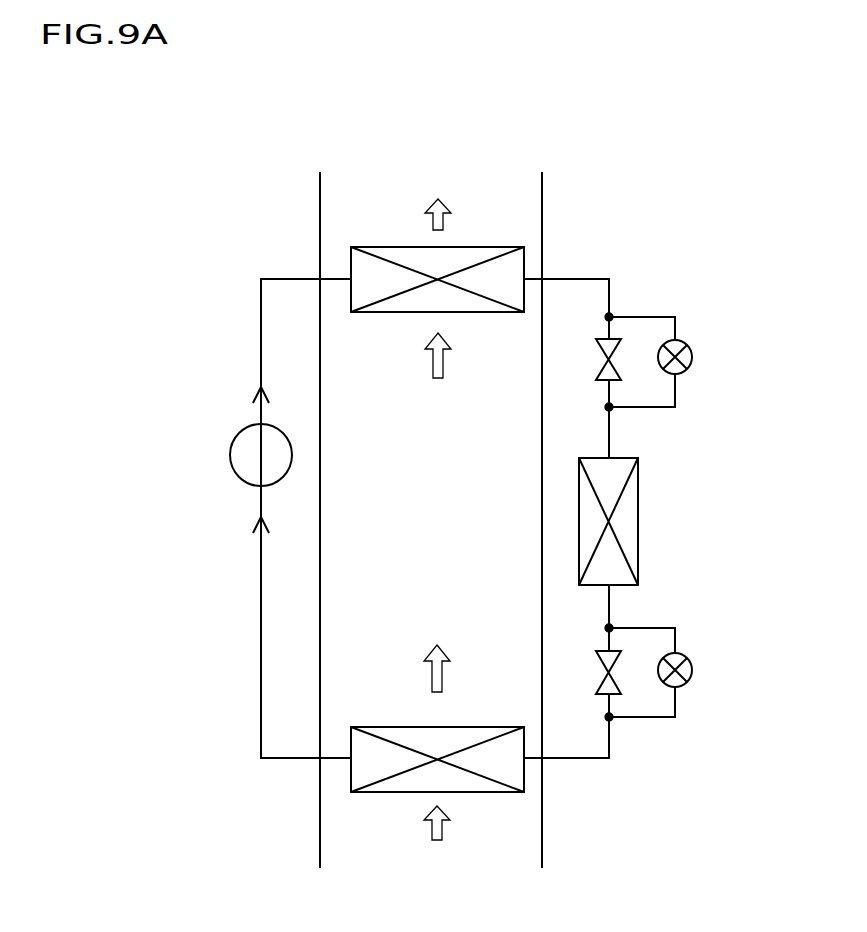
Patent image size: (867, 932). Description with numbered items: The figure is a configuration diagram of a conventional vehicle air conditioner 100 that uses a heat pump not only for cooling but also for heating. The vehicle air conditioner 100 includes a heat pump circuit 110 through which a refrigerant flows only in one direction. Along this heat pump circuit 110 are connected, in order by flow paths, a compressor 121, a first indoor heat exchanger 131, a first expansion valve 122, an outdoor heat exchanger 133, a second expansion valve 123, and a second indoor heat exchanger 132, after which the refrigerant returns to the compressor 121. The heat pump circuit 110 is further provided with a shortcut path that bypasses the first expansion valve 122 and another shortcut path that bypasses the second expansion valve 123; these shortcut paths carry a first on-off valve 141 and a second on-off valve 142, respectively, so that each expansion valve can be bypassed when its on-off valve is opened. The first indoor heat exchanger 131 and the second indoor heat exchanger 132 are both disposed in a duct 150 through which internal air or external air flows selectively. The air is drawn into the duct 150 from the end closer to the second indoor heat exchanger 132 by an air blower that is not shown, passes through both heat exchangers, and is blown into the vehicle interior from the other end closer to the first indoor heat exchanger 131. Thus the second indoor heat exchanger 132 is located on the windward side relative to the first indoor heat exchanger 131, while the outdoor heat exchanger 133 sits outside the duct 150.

The vehicle air conditioner 100 is at (608, 128).
The heat pump circuit 110 is at (261, 680).
The compressor 121 is at (230, 452).
The first expansion valve 122 is at (692, 357).
The second expansion valve 123 is at (692, 670).
The first indoor heat exchanger 131 is at (490, 246).
The second indoor heat exchanger 132 is at (487, 793).
The outdoor heat exchanger 133 is at (638, 518).
The first on-off valve 141 is at (596, 345).
The second on-off valve 142 is at (596, 657).
The duct 150 is at (543, 207).